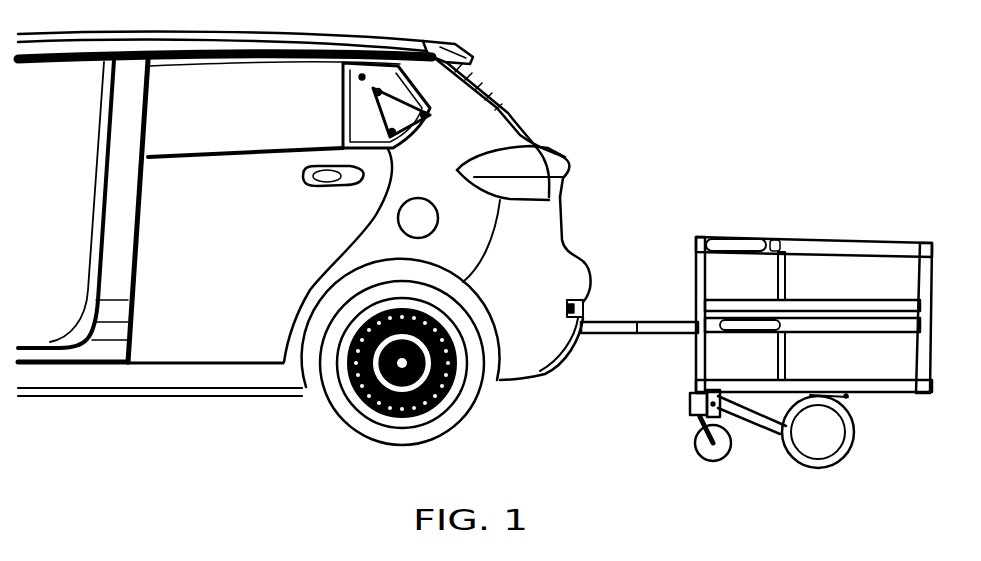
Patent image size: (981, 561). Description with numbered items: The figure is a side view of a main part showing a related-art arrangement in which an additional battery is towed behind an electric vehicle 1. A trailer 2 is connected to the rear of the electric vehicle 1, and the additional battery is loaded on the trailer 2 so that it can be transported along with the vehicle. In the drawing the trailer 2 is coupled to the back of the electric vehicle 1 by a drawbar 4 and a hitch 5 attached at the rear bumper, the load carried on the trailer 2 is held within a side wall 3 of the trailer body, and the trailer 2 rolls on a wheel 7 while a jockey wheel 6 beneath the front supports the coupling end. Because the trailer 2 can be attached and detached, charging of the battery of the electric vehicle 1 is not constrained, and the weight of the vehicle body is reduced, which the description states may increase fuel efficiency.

The electric vehicle 1 is at (460, 133).
The trailer 2 is at (702, 245).
The trailer side wall / load box 3 is at (843, 283).
The drawbar 4 is at (609, 322).
The trailer coupling / hitch 5 is at (612, 270).
The jockey wheel (support wheel) 6 is at (697, 425).
The trailer wheel 7 is at (820, 432).